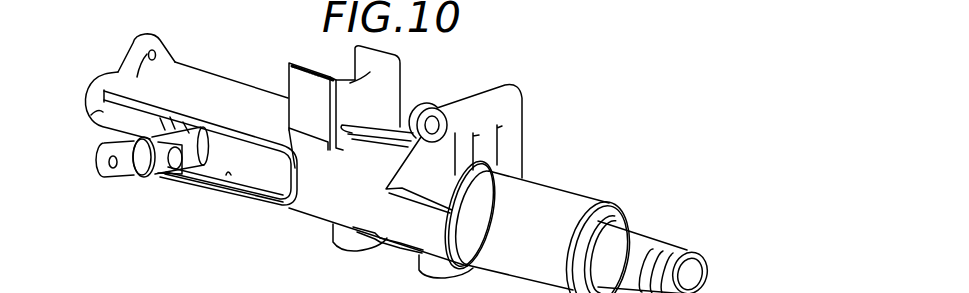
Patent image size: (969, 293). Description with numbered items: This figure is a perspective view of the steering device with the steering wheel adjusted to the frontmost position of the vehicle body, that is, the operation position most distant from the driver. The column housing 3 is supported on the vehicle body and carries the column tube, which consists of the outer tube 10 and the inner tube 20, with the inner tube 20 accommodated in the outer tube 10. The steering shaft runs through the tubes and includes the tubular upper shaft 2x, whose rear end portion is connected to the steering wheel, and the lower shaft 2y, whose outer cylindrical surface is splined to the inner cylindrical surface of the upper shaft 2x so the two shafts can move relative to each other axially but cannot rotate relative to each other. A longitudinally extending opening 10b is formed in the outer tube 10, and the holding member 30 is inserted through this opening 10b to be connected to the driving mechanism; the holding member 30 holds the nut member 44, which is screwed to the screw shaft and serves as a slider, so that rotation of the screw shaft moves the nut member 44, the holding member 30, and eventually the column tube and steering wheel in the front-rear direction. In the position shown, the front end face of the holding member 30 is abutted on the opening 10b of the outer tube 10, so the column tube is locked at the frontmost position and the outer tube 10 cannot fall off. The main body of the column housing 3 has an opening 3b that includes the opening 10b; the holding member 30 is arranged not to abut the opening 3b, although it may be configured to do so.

The upper shaft 2x is at (637, 250).
The lower shaft 2y is at (100, 113).
The column housing 3 is at (513, 135).
The opening 3b is at (283, 178).
The outer tube 10 is at (540, 218).
The opening 10b is at (222, 178).
The inner tube 20 is at (262, 168).
The holding member 30 is at (162, 178).
The nut member 44 is at (143, 163).